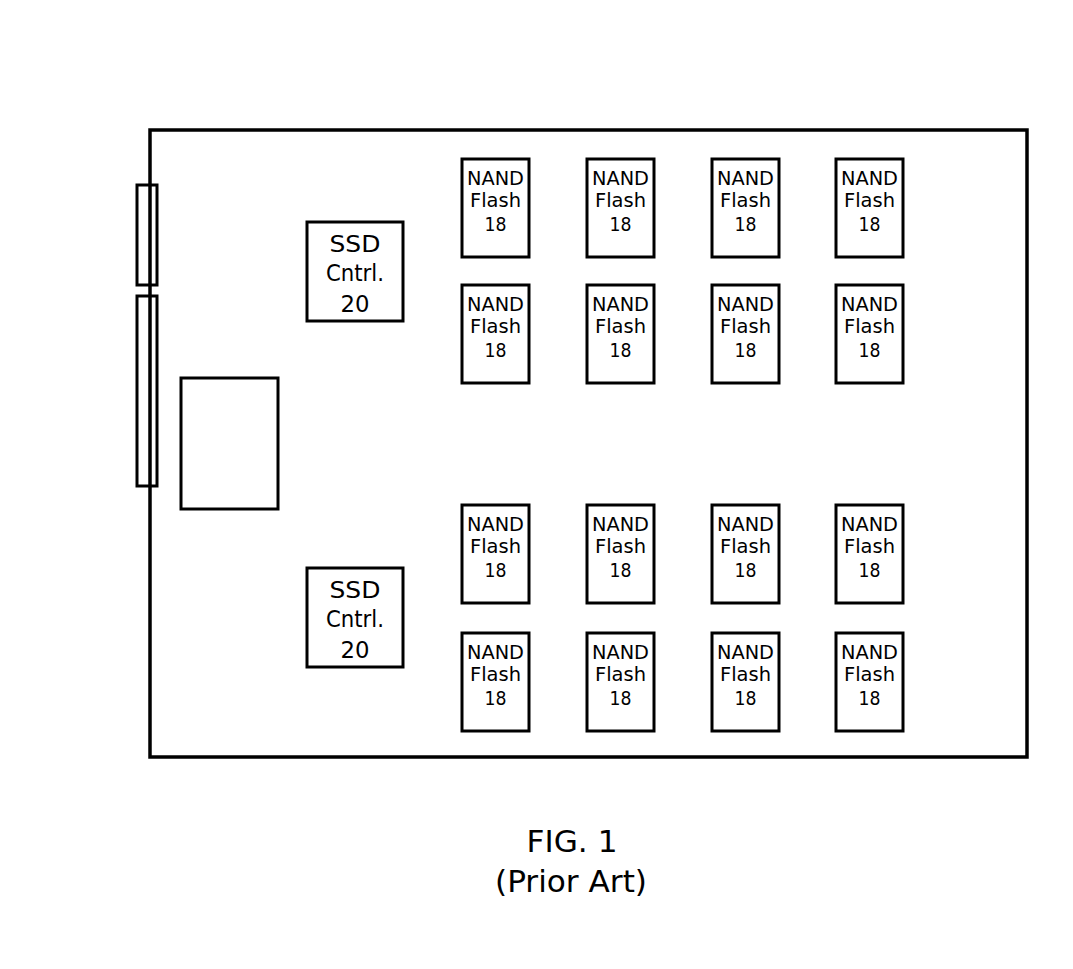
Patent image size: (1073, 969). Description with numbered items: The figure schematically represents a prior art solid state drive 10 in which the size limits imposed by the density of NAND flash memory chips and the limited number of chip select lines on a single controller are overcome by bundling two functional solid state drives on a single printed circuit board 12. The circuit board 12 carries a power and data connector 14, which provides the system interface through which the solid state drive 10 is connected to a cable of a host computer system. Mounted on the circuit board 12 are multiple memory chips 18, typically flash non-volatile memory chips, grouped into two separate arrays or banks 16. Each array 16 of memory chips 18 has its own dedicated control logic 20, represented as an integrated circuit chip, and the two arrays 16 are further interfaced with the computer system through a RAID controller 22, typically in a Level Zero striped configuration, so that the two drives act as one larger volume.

The solid state drive 10 is at (166, 90).
The printed circuit board 12 is at (357, 742).
The power and data connector 14 is at (102, 222).
The arrays of memory chips 16 is at (946, 264).
The memory chips 18 is at (682, 445).
The control logic 20 is at (355, 444).
The RAID controller 22 is at (229, 443).